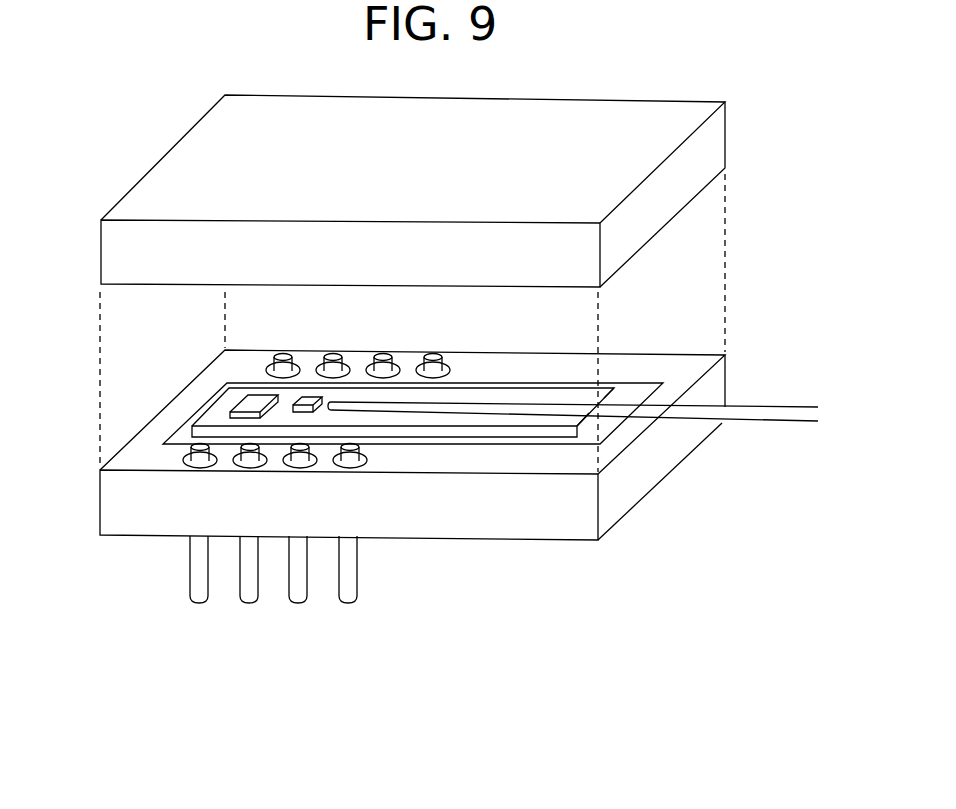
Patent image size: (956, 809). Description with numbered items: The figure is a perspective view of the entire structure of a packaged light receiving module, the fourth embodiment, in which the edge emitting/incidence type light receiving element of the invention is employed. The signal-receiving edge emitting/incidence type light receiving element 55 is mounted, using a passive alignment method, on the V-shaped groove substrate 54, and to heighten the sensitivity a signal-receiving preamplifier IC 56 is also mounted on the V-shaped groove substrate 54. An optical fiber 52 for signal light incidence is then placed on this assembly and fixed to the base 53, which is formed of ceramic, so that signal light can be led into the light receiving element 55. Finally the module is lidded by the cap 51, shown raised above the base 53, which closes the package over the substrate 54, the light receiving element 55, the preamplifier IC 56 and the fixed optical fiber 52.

The cap 51 is at (657, 190).
The optical fiber 52 is at (573, 395).
The base 53 is at (662, 457).
The V-shaped groove substrate 54 is at (515, 420).
The edge emitting/incidence type light receiving element 55 is at (307, 403).
The preamplifier IC 56 is at (256, 406).